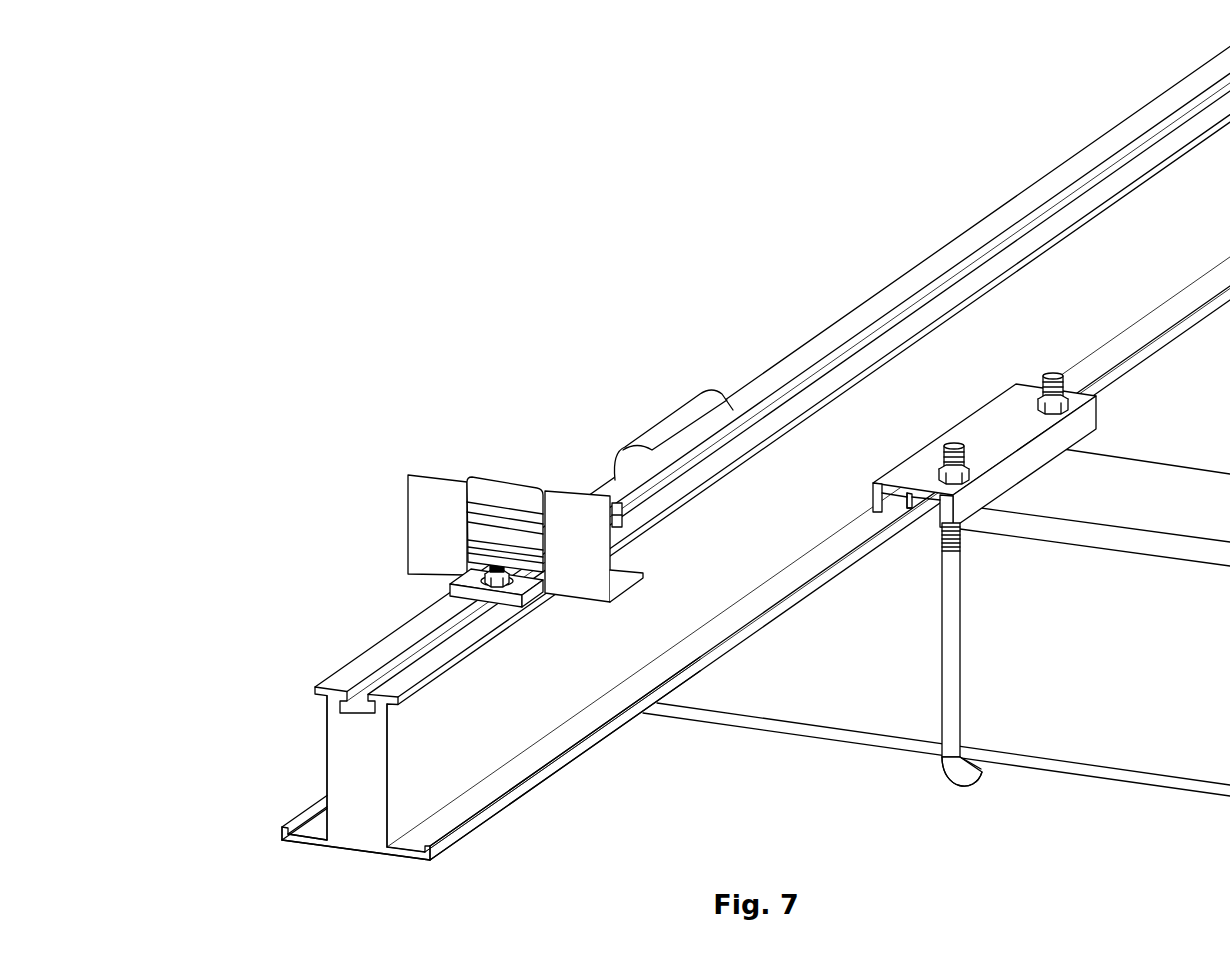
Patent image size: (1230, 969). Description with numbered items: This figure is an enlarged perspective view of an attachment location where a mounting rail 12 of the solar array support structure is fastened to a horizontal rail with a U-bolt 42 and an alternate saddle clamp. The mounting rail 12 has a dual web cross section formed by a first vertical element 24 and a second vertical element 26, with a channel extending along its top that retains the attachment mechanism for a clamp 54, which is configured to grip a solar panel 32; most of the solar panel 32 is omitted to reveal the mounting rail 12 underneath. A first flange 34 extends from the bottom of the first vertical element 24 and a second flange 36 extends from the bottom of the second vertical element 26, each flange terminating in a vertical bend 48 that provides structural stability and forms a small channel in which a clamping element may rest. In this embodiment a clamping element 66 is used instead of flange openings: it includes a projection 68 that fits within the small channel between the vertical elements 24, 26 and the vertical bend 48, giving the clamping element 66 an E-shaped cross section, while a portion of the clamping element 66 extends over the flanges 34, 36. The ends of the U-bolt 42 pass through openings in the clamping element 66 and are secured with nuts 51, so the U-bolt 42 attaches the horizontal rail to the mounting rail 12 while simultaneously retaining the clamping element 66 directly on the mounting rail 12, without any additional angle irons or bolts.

The mounting rail 12 is at (872, 250).
The first vertical element 24 is at (417, 785).
The second vertical element 26 is at (345, 757).
The solar panel 32 is at (451, 529).
The first flange 34 is at (567, 735).
The second flange 36 is at (312, 832).
The U-bolt 42 is at (951, 670).
The vertical bend 48 is at (522, 788).
The nut 51 is at (1063, 405).
The clamp 54 is at (515, 500).
The clamping element 66 is at (1008, 437).
The projection 68 is at (907, 493).